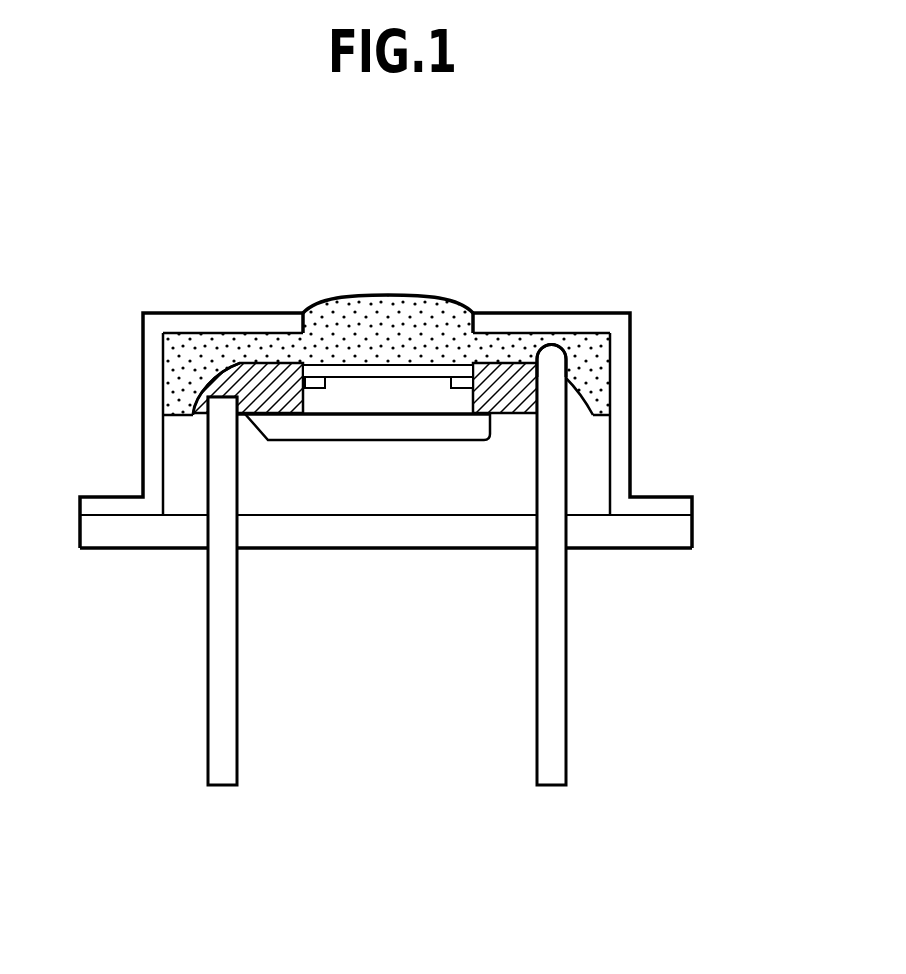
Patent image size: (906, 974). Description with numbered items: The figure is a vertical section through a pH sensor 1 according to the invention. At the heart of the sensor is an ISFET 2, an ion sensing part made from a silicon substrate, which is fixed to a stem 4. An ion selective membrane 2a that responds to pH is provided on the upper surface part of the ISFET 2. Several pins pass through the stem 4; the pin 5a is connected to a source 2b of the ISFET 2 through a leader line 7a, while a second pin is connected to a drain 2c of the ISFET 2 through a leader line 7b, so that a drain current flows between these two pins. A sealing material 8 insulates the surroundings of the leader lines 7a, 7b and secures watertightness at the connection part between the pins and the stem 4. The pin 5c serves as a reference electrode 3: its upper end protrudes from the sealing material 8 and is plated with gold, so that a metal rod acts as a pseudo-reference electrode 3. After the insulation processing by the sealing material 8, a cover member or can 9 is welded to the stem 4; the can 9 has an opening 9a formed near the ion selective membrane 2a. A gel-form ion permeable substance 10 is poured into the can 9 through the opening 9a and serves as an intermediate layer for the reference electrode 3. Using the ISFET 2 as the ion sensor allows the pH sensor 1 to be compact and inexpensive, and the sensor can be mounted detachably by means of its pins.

The pH sensor 1 is at (412, 502).
The ISFET 2 is at (391, 420).
The ion selective membrane 2a is at (347, 364).
The source 2b is at (309, 389).
The drain 2c is at (458, 390).
The reference electrode 3 is at (553, 355).
The stem 4 is at (693, 533).
The pin 5a is at (208, 635).
The pin 5c is at (567, 627).
The leader line 7a is at (278, 362).
The leader line 7b is at (267, 453).
The sealing material 8 is at (240, 362).
The cover member (can) 9 is at (632, 440).
The opening 9a is at (467, 314).
The gel-form ion permeable substance 10 is at (178, 377).